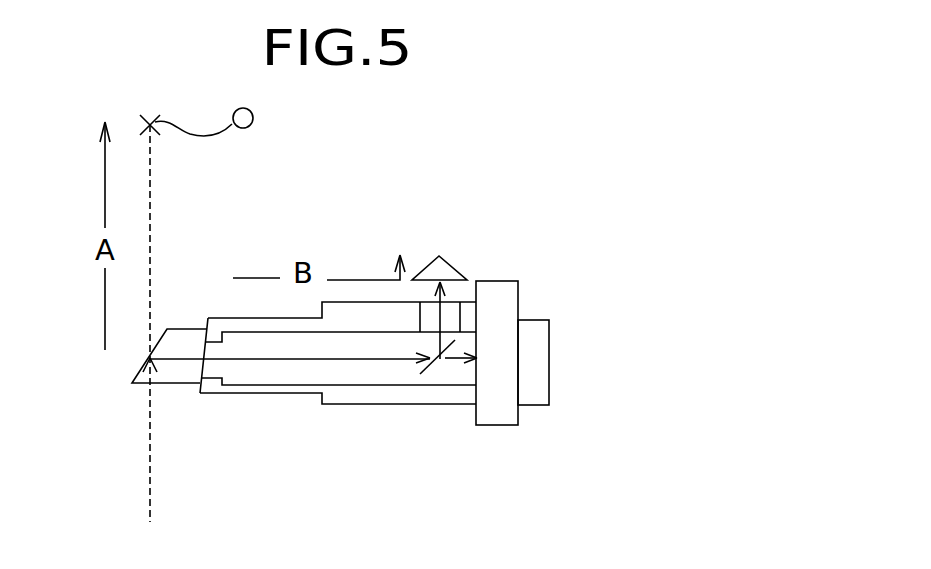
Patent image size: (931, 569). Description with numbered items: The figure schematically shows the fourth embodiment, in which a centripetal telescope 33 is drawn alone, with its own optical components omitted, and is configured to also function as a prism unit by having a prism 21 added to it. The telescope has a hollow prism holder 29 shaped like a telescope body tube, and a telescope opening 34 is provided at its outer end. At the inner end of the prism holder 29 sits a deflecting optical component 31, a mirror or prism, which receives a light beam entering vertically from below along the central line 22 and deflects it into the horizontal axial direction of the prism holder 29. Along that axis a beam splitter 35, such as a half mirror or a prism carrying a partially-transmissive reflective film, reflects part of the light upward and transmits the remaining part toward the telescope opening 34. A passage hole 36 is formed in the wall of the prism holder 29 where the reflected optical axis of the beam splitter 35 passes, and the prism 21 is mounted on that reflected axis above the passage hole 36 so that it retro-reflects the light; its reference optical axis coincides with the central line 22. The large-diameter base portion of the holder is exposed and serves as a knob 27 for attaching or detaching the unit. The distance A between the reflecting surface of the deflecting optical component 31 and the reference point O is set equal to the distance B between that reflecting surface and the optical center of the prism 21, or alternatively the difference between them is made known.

The prism 21 is at (452, 267).
The central line 22 is at (150, 487).
The knob 27 is at (498, 425).
The prism holder 29 is at (350, 404).
The deflecting optical component 31 is at (180, 328).
The centripetal telescope 33 is at (323, 215).
The telescope opening 34 is at (533, 319).
The beam splitter 35 is at (426, 371).
The passage hole 36 is at (455, 312).